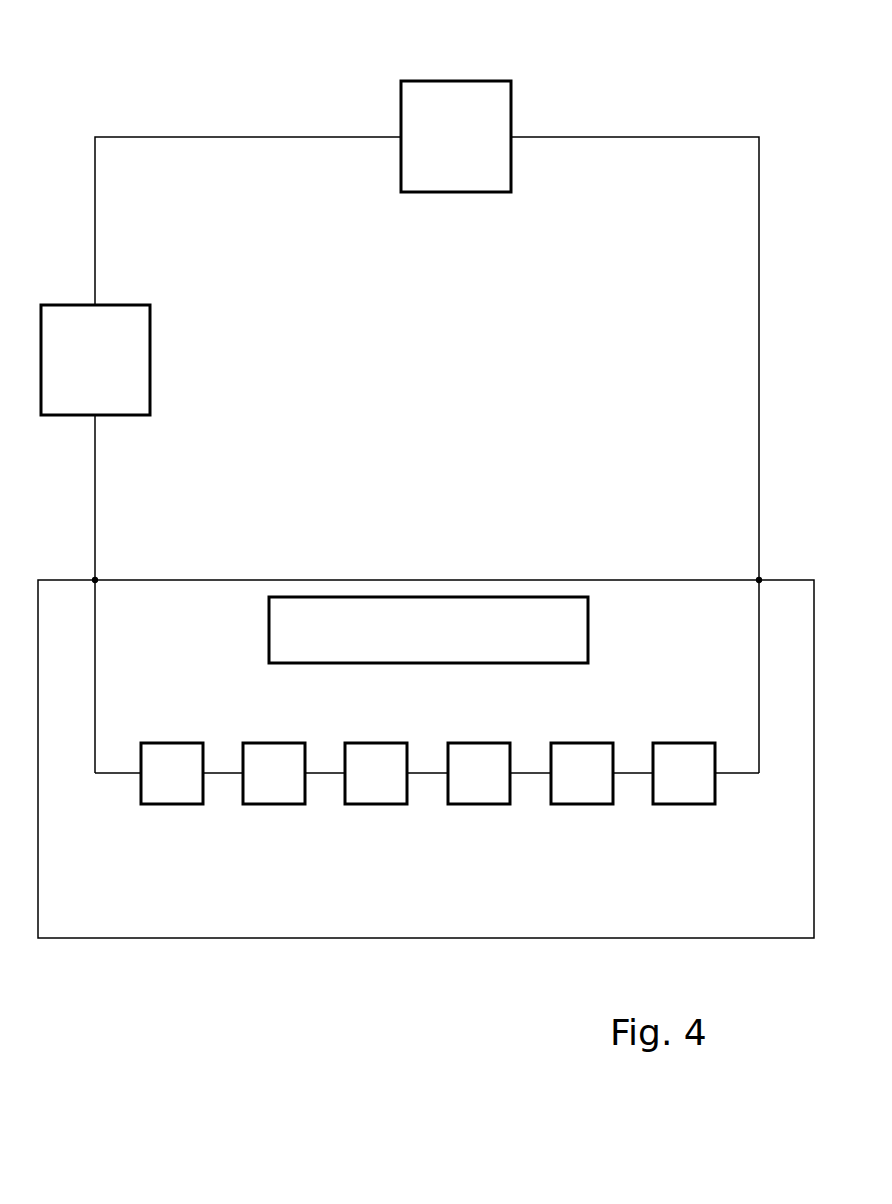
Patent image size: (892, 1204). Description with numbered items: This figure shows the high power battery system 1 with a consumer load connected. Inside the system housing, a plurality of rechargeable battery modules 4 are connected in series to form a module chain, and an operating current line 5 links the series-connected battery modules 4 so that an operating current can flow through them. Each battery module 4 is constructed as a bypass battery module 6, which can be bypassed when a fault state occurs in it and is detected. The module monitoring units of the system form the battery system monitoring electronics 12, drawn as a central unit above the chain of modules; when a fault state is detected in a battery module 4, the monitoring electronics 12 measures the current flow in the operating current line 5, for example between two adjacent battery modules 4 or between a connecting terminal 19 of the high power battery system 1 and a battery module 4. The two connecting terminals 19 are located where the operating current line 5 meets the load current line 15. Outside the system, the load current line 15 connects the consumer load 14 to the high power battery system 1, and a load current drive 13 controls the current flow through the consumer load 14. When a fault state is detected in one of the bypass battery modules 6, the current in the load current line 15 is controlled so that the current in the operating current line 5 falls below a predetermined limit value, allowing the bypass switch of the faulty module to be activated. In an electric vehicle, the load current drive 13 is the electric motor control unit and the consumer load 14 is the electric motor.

The high power battery system 1 is at (733, 925).
The battery module 4 is at (166, 752).
The operating current line 5 is at (96, 690).
The bypass battery module 6 is at (163, 805).
The battery system monitoring electronics 12 is at (414, 628).
The load current drive 13 is at (107, 358).
The consumer load 14 is at (447, 98).
The load current line 15 is at (234, 138).
The connecting terminal 19 is at (96, 578).